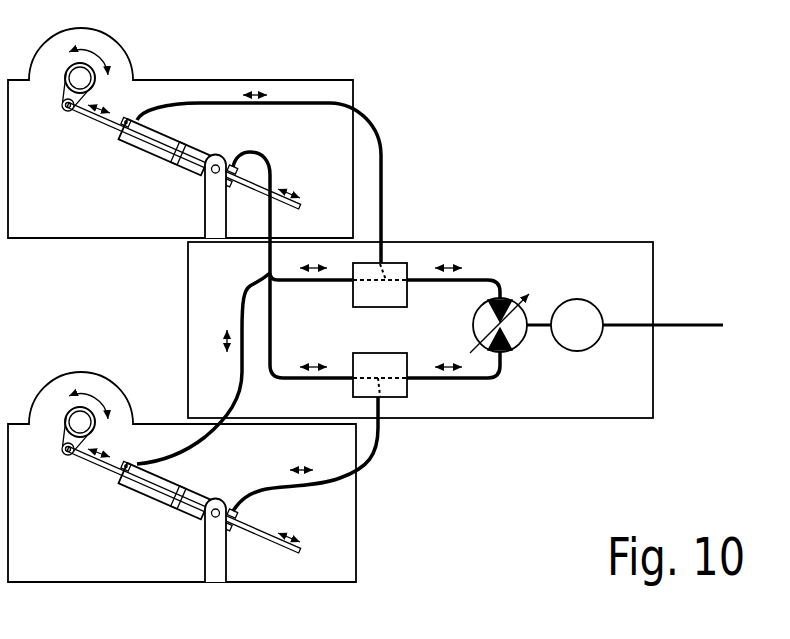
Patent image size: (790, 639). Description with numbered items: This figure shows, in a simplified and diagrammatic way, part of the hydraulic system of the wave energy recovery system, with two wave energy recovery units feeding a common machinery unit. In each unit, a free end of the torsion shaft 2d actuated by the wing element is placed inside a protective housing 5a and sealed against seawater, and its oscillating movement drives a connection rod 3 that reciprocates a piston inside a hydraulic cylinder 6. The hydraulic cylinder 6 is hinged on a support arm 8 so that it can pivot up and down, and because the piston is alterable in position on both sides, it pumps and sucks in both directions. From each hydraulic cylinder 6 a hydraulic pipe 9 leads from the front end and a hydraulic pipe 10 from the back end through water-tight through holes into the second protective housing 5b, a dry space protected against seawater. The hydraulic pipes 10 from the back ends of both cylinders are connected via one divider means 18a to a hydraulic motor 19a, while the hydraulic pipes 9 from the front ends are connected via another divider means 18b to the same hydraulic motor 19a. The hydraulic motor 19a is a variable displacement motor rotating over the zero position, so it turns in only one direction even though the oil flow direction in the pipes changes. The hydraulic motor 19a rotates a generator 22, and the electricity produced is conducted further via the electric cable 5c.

The torsion shaft 2d is at (65, 72).
The connection rod 3 is at (107, 120).
The protective housing 5a is at (178, 80).
The second protective housing 5b is at (517, 241).
The electric cable 5c is at (680, 322).
The hydraulic cylinder 6 is at (173, 136).
The support arm 8 is at (208, 205).
The hydraulic pipe 9 is at (363, 113).
The hydraulic pipe 10 is at (257, 151).
The divider means 18a is at (367, 358).
The divider means 18b is at (362, 290).
The hydraulic motor 19a is at (517, 345).
The generator 22 is at (572, 300).